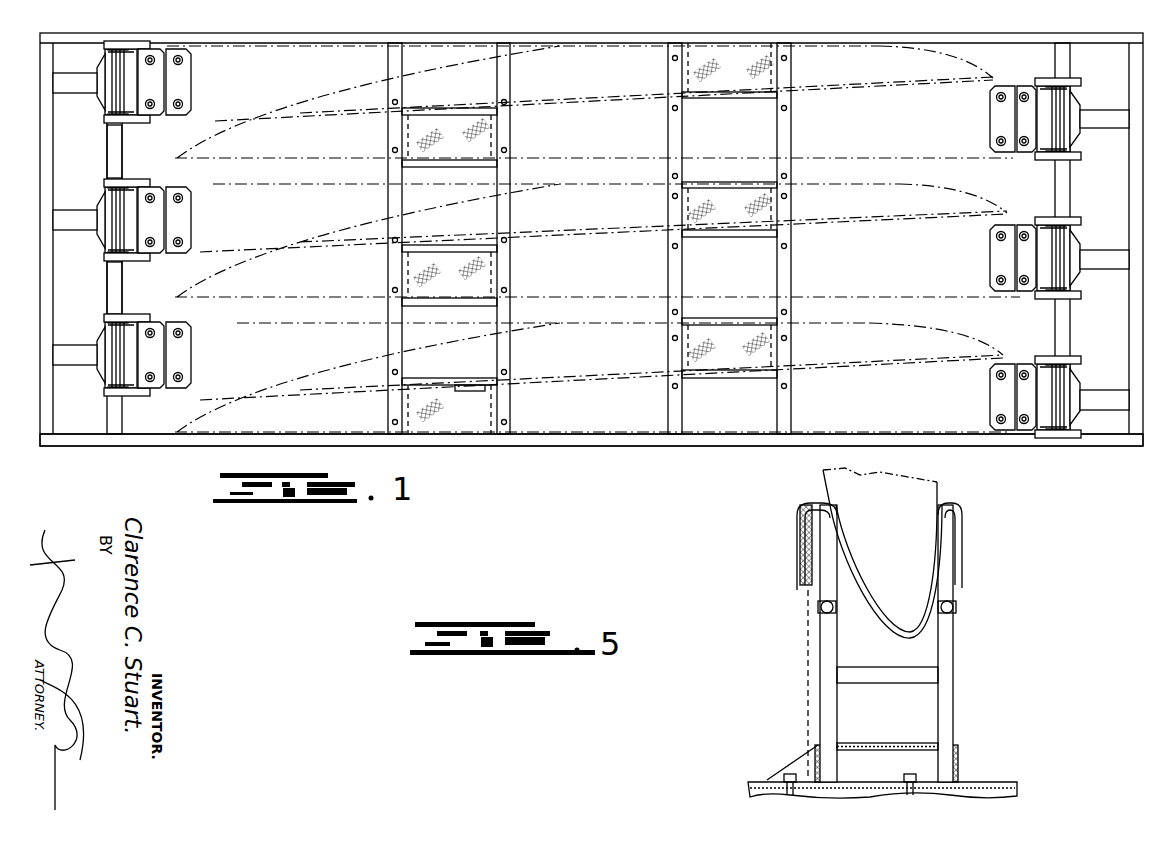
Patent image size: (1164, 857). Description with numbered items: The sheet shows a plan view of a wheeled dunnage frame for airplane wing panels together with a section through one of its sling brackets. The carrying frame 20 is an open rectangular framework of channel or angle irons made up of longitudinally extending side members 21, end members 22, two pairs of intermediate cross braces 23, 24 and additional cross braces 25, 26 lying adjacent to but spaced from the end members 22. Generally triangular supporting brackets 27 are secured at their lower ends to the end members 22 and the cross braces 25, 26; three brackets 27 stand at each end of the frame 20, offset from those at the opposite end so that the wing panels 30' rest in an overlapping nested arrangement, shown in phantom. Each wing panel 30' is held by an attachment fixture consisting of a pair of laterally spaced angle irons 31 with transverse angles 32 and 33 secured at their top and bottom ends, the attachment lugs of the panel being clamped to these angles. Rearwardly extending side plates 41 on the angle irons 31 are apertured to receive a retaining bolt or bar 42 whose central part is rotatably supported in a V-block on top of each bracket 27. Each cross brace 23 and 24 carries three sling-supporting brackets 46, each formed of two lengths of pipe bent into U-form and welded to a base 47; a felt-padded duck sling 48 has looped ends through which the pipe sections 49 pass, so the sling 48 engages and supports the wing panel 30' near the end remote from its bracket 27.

In FIG. 1, the carrying frame 20 is at (717, 442).
In FIG. 1, the side members 21 is at (1104, 32).
In FIG. 1, the end members 22 is at (43, 277).
In FIG. 1, the intermediate cross brace 23 is at (492, 311).
In FIG. 1, the intermediate cross brace 24 is at (777, 305).
In FIG. 1, the additional cross brace 25 is at (117, 290).
In FIG. 1, the additional cross brace 26 is at (1066, 330).
In FIG. 1, the supporting bracket 27 is at (77, 97).
In FIG. 1, the wing panel 30' is at (593, 239).
In FIG. 1, the angle irons 31 is at (142, 56).
In FIG. 1, the transverse angle 32 is at (157, 80).
In FIG. 1, the transverse angle 33 is at (183, 90).
In FIG. 1, the side plates 41 is at (134, 116).
In FIG. 1, the retaining bolt or bar 42 is at (118, 168).
In FIG. 5, the sling-supporting bracket 46 is at (955, 648).
In FIG. 5, the base 47 is at (955, 762).
In FIG. 1, the sling 48 is at (467, 390).
In FIG. 5, the sling 48 is at (960, 540).
In FIG. 5, the pipe sections 49 is at (957, 600).